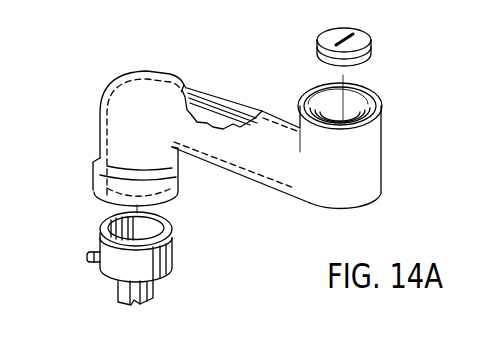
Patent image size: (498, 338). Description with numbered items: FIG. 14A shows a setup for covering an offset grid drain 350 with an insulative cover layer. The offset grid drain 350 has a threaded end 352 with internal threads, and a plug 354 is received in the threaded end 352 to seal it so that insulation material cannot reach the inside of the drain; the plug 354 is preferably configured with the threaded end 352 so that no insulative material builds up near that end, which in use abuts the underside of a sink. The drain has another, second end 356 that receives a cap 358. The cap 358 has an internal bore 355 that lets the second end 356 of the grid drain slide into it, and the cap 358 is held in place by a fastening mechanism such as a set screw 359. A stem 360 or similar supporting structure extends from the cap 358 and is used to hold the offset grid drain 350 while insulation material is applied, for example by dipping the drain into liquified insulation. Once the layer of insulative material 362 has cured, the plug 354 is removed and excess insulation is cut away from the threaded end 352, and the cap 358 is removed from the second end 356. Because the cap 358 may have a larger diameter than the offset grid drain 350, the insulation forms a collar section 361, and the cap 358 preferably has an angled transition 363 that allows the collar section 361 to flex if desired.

The offset grid drain 350 is at (398, 175).
The threaded end 352 is at (356, 110).
The plug 354 is at (373, 52).
The internal bore 355 is at (158, 226).
The second end 356 is at (100, 188).
The cap 358 is at (175, 257).
The set screw 359 is at (90, 262).
The stem 360 is at (155, 290).
The collar section 361 is at (92, 172).
The layer of insulative material 362 is at (178, 79).
The angled transition 363 is at (100, 230).